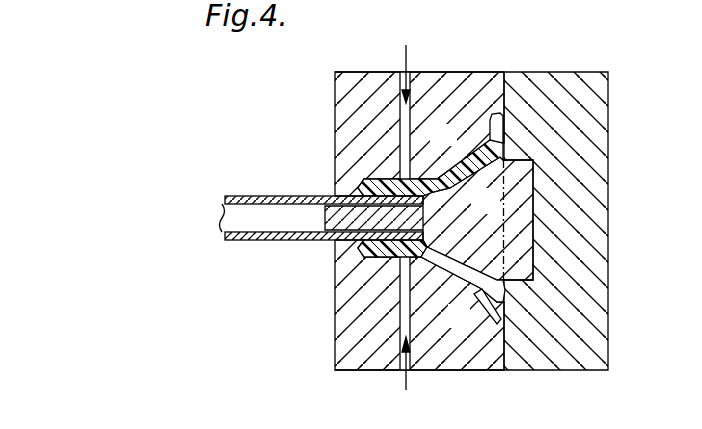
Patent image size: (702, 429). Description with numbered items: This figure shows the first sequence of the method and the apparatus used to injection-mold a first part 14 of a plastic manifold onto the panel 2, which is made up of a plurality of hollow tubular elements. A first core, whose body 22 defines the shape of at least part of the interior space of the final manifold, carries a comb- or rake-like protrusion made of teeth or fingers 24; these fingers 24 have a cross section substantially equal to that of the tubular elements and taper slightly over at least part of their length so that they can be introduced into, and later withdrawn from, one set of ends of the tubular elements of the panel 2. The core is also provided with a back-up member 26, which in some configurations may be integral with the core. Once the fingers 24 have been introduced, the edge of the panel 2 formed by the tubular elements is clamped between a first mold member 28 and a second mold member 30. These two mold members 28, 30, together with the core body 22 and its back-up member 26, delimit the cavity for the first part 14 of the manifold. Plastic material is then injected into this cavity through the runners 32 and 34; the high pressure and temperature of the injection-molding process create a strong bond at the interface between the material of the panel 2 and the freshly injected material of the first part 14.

The panel 2 is at (243, 197).
The first part of plastic manifold 14 is at (462, 152).
The body of first core 22 is at (497, 212).
The fingers 24 is at (353, 222).
The back-up member 26 is at (600, 111).
The first mold member 28 is at (362, 122).
The second mold member 30 is at (362, 354).
The runner 32 is at (408, 108).
The runner 34 is at (407, 323).